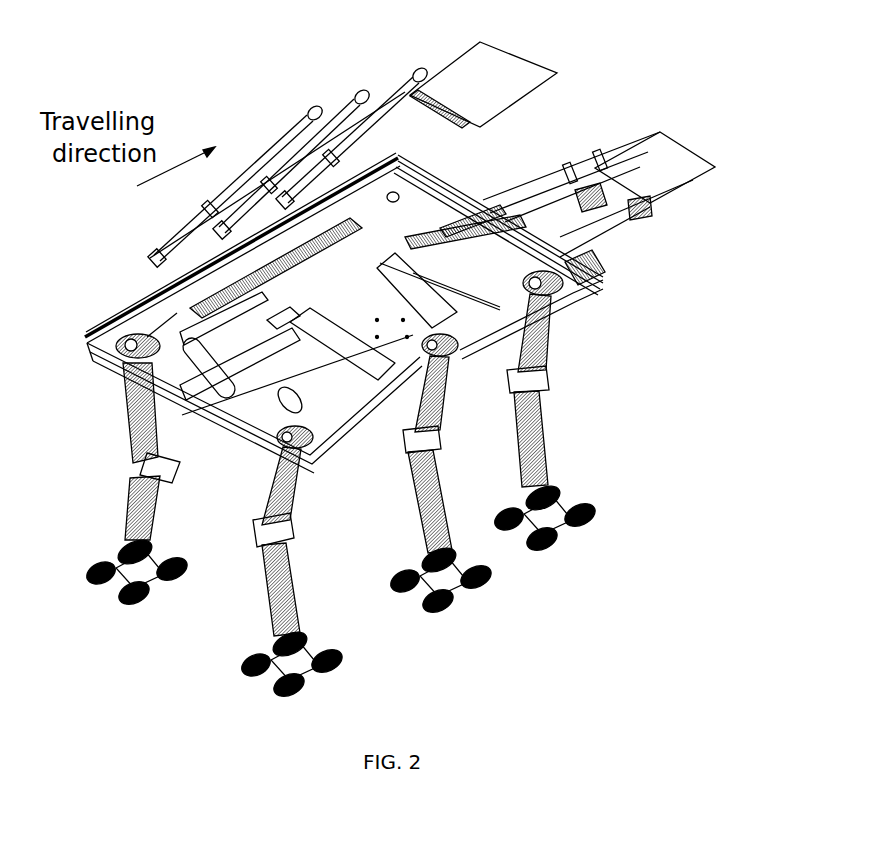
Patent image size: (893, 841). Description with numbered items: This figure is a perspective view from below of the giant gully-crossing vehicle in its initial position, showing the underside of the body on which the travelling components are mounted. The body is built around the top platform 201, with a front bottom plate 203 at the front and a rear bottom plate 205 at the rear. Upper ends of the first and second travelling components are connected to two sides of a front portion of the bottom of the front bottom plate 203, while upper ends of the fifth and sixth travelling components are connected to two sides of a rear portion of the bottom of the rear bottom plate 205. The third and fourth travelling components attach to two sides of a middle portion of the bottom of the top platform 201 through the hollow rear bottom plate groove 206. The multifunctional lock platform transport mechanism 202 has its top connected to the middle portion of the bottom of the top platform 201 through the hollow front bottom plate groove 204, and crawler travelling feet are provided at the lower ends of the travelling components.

The top platform 201 is at (477, 200).
The multifunctional lock platform transport mechanism 202 is at (628, 232).
The front bottom plate 203 is at (600, 281).
The hollow front bottom plate groove 204 is at (548, 312).
The rear bottom plate 205 is at (123, 367).
The hollow rear bottom plate groove 206 is at (197, 288).